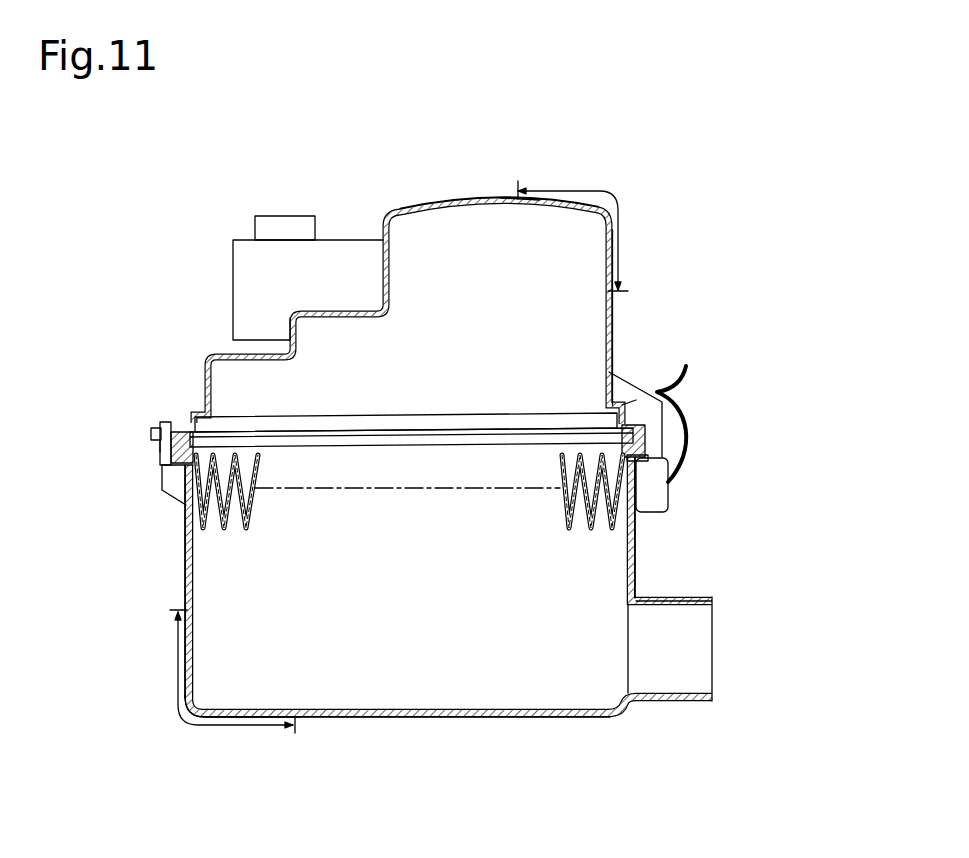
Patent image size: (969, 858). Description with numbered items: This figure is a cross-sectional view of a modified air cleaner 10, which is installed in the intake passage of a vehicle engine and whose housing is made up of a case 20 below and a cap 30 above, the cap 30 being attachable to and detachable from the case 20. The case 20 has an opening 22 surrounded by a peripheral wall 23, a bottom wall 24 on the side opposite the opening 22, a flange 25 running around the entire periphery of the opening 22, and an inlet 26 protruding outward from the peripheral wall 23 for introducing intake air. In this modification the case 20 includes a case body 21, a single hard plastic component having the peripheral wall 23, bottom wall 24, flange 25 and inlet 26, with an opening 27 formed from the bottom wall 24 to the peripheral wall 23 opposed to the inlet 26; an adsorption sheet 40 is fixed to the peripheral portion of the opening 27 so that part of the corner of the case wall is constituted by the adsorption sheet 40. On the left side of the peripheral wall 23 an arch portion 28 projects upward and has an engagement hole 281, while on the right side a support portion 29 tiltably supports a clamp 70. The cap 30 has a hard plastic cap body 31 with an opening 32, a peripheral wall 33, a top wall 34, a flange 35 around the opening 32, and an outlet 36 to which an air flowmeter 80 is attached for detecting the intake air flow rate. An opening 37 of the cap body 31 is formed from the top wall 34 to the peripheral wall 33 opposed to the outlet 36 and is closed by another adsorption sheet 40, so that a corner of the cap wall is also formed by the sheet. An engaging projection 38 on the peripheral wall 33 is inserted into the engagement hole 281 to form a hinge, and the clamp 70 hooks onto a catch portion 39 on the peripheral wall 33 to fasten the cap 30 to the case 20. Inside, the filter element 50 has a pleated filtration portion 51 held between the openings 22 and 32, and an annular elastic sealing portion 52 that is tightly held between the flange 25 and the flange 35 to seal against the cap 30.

The air cleaner 10 is at (168, 222).
The case 20 is at (180, 727).
The case body 21 is at (184, 580).
The opening 22 is at (600, 520).
The peripheral wall 23 is at (634, 562).
The bottom wall 24 is at (344, 718).
The flange 25 is at (643, 471).
The inlet 26 is at (672, 702).
The opening 27 is at (283, 712).
The arch portion 28 is at (166, 421).
The engagement hole 281 is at (160, 446).
The support portion 29 is at (650, 502).
The cap 30 is at (645, 202).
The cap body 31 is at (433, 198).
The opening 32 is at (212, 427).
The peripheral wall 33 is at (614, 324).
The top wall 34 is at (462, 197).
The flange 35 is at (637, 417).
The outlet 36 is at (345, 240).
The opening 37 is at (522, 203).
The engaging projection 38 is at (157, 427).
The catch portion 39 is at (636, 398).
The adsorption sheet 40 is at (387, 453).
The filter element 50 is at (93, 476).
The filtration portion 51 is at (215, 542).
The sealing portion 52 is at (160, 456).
The clamp 70 is at (693, 440).
The air flowmeter 80 is at (284, 216).